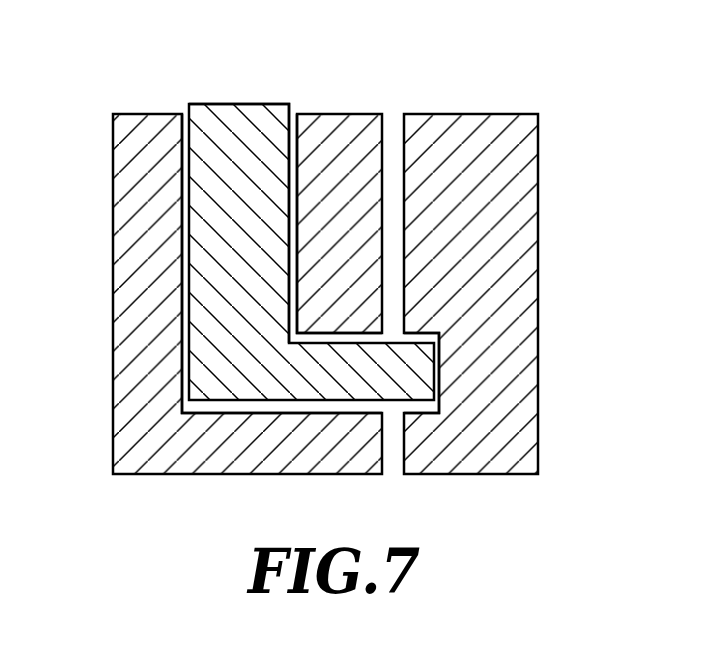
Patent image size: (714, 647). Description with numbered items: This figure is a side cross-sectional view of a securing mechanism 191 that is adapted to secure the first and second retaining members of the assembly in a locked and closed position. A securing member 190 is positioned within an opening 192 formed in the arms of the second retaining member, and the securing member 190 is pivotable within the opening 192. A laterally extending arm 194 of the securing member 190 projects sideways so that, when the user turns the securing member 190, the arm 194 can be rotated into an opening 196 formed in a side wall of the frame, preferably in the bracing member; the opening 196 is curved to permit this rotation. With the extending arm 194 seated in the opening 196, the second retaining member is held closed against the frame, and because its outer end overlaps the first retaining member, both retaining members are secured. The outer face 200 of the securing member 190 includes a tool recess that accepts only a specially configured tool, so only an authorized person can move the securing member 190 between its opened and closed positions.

The securing member 190 is at (243, 115).
The securing mechanism 191 is at (136, 90).
The opening 192 is at (185, 113).
The laterally extending arm 194 is at (435, 375).
The opening 196 is at (422, 408).
The outer face 200 is at (267, 103).